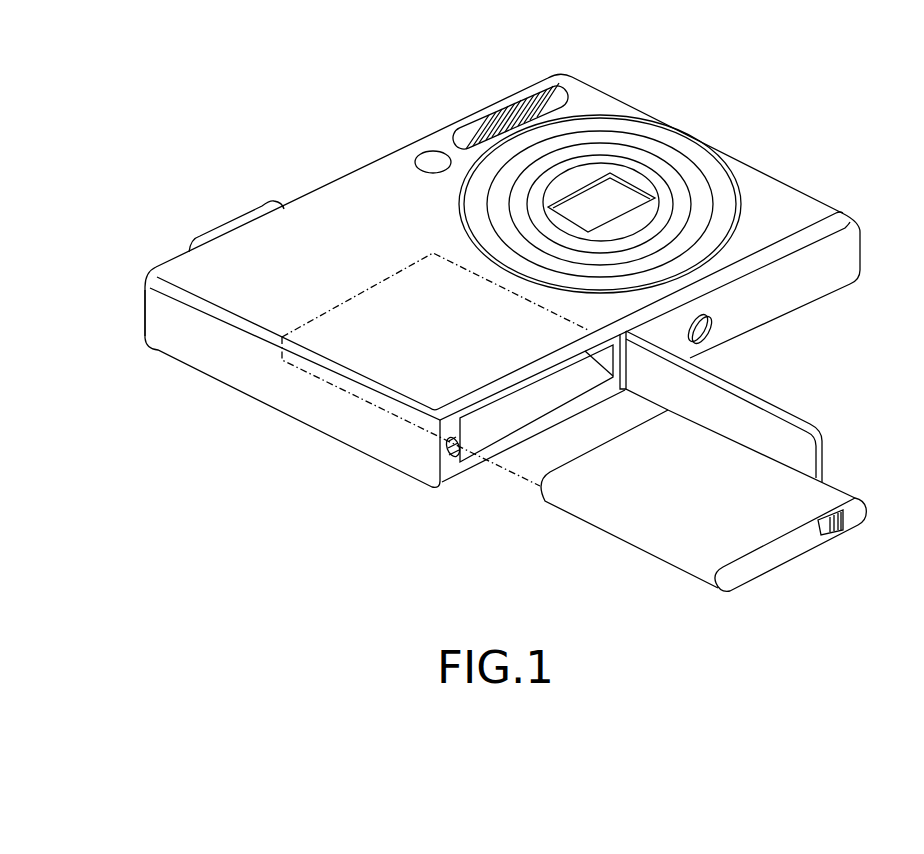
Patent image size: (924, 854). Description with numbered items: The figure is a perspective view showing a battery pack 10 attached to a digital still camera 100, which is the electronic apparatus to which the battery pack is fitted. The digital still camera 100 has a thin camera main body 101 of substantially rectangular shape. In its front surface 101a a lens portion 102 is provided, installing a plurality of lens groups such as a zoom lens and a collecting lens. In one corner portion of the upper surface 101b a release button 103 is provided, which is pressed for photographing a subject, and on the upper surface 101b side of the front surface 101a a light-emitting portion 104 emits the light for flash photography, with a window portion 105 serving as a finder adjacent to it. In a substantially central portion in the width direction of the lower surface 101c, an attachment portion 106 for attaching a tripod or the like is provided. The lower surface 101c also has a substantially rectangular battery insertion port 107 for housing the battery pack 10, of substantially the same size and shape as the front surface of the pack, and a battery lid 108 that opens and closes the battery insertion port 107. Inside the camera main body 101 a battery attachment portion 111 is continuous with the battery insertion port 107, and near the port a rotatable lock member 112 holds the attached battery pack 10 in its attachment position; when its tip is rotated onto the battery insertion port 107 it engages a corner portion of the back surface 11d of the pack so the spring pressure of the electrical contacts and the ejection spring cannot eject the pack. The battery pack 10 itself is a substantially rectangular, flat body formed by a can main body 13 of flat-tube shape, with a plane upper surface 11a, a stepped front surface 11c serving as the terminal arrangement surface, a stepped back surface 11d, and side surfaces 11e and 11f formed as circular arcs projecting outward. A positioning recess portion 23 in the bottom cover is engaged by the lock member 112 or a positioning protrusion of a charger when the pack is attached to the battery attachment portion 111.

The digital still camera 100 is at (730, 101).
The camera main body 101 is at (775, 190).
The front surface 101a is at (360, 193).
The upper surface 101b is at (172, 268).
The lower surface 101c is at (790, 283).
The lens portion 102 is at (657, 140).
The release button 103 is at (262, 207).
The light-emitting portion 104 is at (502, 105).
The window portion 105 is at (428, 156).
The attachment portion 106 is at (704, 343).
The battery insertion port 107 is at (523, 390).
The battery lid 108 is at (803, 433).
The battery attachment portion 111 is at (360, 300).
The lock member 112 is at (450, 470).
The battery pack 10 is at (693, 543).
The upper surface 11a is at (623, 490).
The front surface 11c is at (652, 418).
The back surface 11d is at (783, 557).
The side surface 11e is at (647, 547).
The side surface 11f is at (869, 444).
The can main body 13 is at (762, 472).
The positioning recess portion 23 is at (837, 533).